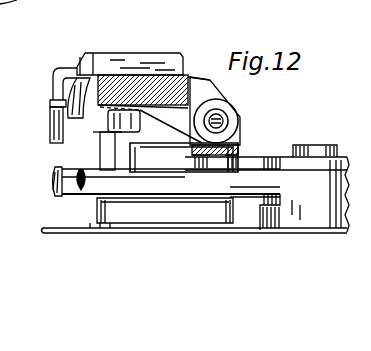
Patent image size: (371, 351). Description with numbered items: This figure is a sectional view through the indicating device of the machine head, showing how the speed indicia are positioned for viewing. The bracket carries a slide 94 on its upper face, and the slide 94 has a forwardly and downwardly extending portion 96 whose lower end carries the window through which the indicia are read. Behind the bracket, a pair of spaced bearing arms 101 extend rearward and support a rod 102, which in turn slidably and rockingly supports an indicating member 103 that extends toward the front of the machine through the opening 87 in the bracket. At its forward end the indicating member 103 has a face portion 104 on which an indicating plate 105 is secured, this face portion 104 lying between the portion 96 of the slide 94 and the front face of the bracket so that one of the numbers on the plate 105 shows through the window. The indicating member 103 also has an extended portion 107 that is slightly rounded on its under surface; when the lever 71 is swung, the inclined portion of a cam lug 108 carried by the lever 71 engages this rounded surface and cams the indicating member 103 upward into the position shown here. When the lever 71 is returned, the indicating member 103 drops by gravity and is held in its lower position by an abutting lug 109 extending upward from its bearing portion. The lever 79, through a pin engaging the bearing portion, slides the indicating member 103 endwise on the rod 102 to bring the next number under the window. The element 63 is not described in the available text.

The boss 63 is at (310, 146).
The lever 71 is at (103, 180).
The lever 79 is at (50, 185).
The opening 87 is at (32, 0).
The slide 94 is at (118, 62).
The forwardly and downwardly extending portion 96 is at (74, 72).
The bearing arms 101 is at (197, 77).
The rod 102 is at (223, 122).
The indicating member 103 is at (161, 142).
The face portion 104 is at (78, 137).
The indicating plate 105 is at (68, 98).
The extended portion 107 is at (138, 120).
The cam lug 108 is at (118, 150).
The abutting lug 109 is at (208, 79).